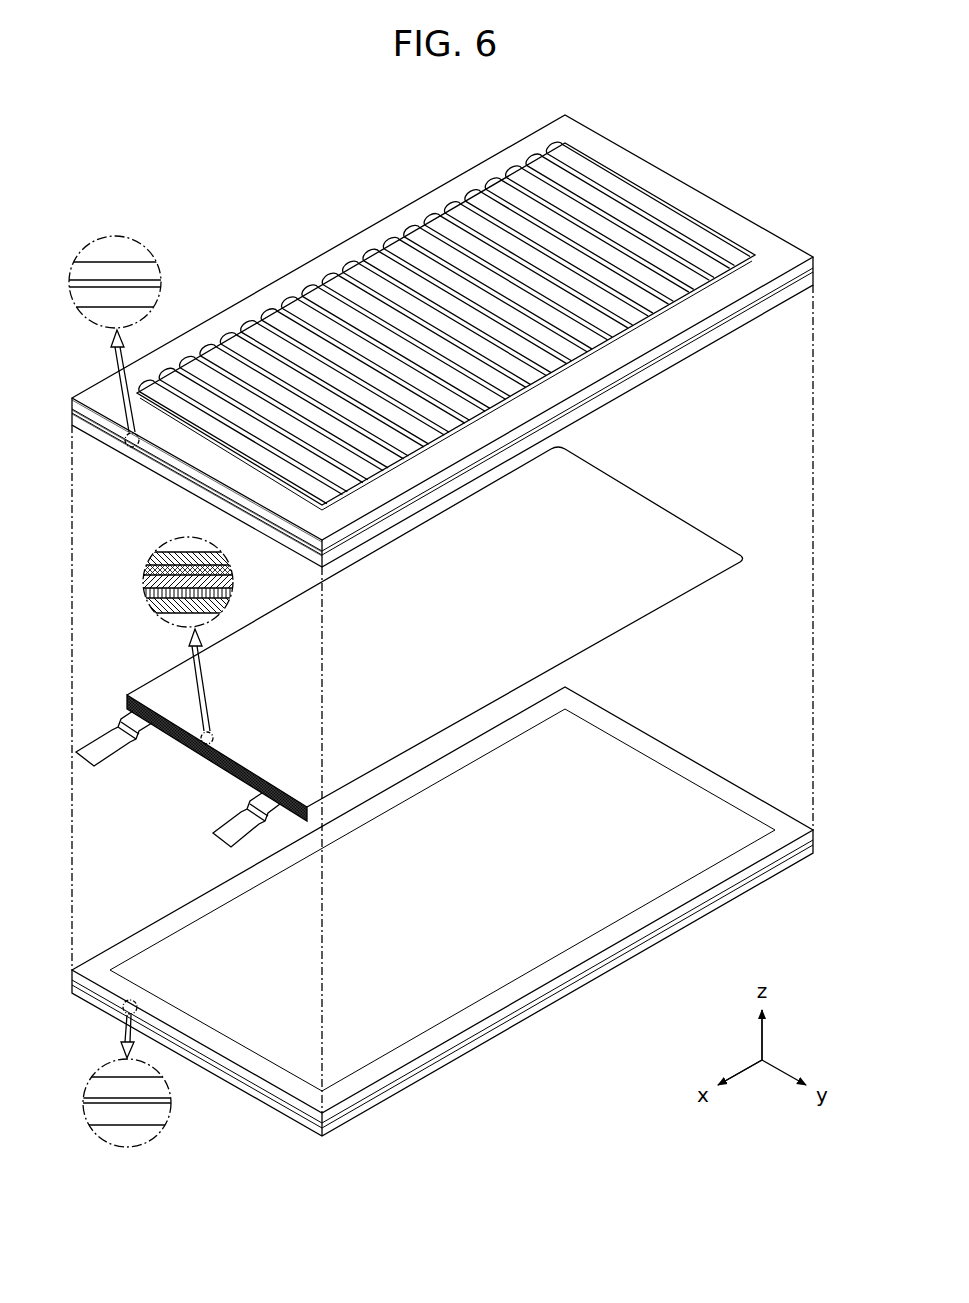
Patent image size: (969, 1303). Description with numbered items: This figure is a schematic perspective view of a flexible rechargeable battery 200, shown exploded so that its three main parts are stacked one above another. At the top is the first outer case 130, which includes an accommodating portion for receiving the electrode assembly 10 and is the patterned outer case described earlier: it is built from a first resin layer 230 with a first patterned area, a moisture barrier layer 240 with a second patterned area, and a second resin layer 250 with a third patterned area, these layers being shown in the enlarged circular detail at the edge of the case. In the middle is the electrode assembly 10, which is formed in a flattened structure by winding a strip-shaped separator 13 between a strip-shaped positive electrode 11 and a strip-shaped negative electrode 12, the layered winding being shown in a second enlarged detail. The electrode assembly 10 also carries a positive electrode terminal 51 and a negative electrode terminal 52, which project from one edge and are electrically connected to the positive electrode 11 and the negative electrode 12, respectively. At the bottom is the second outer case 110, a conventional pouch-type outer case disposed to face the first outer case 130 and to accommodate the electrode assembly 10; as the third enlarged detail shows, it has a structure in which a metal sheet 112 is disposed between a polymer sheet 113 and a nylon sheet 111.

The flexible rechargeable battery 200 is at (432, 100).
The first outer case 130 is at (696, 179).
The second resin layer 250 is at (97, 268).
The moisture barrier layer 240 is at (130, 282).
The first resin layer 230 is at (150, 296).
The electrode assembly 10 is at (665, 488).
The positive electrode 11 is at (188, 558).
The separator 13 is at (188, 581).
The negative electrode 12 is at (188, 605).
The positive electrode terminal 51 is at (106, 748).
The negative electrode terminal 52 is at (220, 842).
The second outer case 110 is at (708, 747).
The polymer sheet 113 is at (160, 1092).
The metal sheet 112 is at (108, 1101).
The nylon sheet 111 is at (146, 1118).